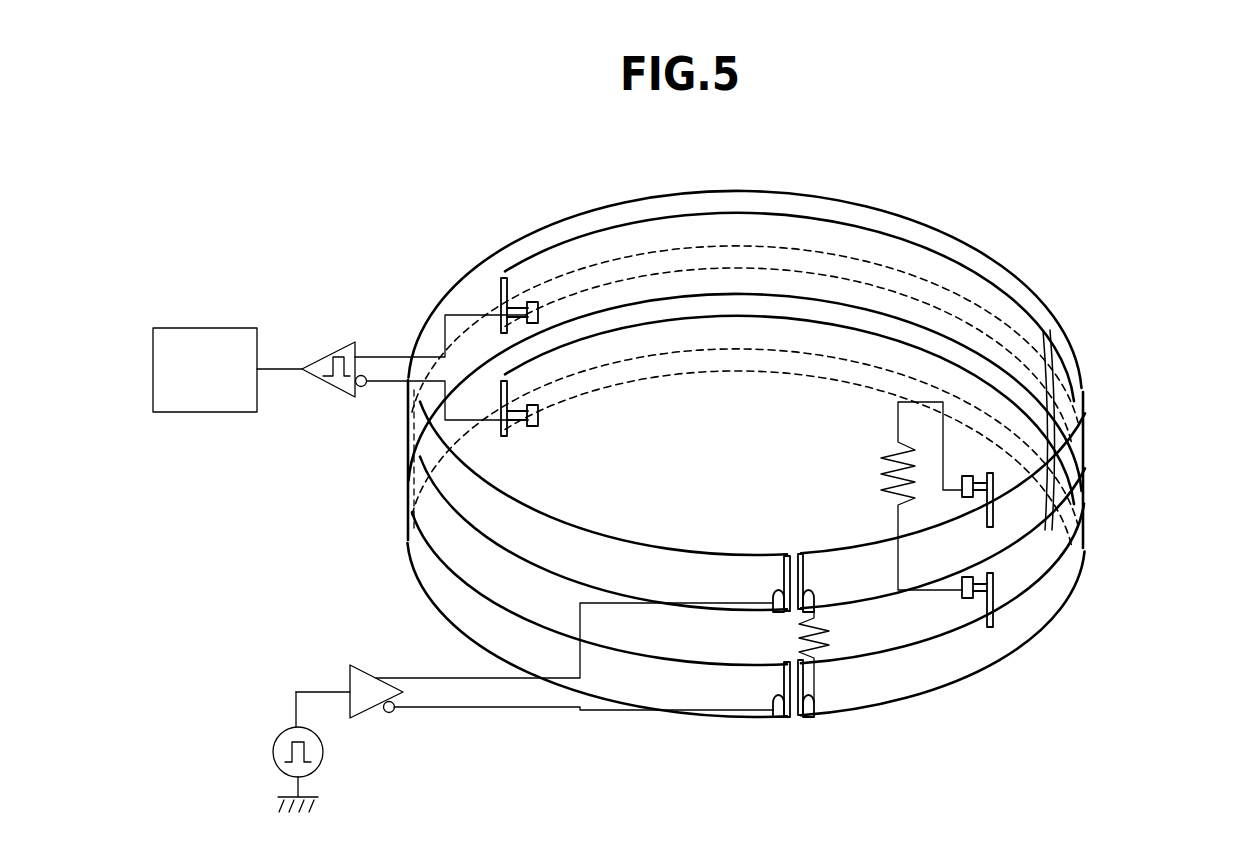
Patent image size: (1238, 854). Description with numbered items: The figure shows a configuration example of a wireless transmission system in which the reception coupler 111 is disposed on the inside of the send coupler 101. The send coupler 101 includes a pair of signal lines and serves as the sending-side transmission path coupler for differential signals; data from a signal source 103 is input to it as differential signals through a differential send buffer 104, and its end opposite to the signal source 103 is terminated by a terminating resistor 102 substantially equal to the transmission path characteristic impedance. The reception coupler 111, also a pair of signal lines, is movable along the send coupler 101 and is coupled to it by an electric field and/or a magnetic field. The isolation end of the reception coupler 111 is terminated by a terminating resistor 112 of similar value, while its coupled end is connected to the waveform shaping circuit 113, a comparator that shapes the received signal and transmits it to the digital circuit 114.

The send coupler 101 is at (1088, 428).
The terminating resistor 102 is at (835, 660).
The signal source 103 is at (272, 752).
The differential send buffer 104 is at (365, 665).
The reception coupler 111 is at (680, 340).
The terminating resistor 112 is at (880, 480).
The waveform shaping circuit 113 is at (340, 342).
The digital circuit 114 is at (210, 328).